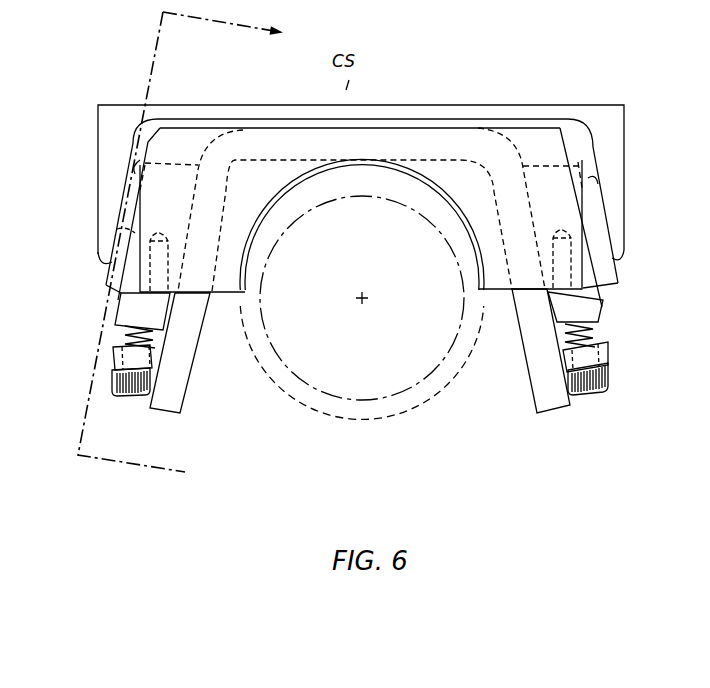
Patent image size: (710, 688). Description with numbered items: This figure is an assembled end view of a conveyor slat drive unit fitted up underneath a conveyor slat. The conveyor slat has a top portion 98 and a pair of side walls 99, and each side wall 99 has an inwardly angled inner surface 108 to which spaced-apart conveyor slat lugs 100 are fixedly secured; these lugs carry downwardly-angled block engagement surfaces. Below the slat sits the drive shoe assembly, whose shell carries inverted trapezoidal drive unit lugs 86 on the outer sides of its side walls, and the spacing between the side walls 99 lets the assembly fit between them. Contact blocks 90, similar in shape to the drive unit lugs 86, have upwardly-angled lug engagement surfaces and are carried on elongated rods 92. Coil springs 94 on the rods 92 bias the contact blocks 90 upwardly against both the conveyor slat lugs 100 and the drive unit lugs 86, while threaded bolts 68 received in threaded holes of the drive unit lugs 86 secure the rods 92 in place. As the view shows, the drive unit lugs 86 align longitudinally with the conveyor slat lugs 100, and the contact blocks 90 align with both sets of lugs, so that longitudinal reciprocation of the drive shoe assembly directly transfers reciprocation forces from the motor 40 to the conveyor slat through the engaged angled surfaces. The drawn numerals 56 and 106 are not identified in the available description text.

The motor 40 is at (389, 426).
The cap 56 is at (543, 147).
The threaded bolts 68 is at (125, 398).
The drive unit lugs 86 is at (117, 229).
The contact blocks 90 is at (138, 310).
The elongated rods 92 is at (116, 358).
The coil springs 94 is at (122, 332).
The top portion 98 is at (418, 112).
The side walls 99 is at (110, 199).
The conveyor slat lugs 100 is at (108, 272).
The side wall 106 is at (613, 205).
The inwardly angled inner surface 108 is at (137, 172).